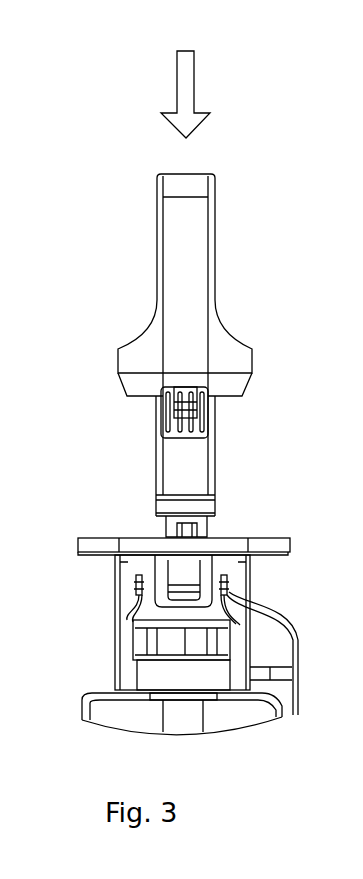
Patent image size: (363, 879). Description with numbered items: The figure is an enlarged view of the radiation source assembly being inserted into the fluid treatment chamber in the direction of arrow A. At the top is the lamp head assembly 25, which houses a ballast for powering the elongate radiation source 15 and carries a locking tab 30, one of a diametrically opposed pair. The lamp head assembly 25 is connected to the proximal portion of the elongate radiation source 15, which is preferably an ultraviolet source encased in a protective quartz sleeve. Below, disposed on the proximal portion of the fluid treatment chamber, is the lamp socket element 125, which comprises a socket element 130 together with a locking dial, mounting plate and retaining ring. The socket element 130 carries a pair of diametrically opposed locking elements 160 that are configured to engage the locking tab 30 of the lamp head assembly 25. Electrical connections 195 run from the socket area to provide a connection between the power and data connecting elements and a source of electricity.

The direction of insertion A is at (193, 84).
The lamp head assembly 25 is at (203, 210).
The locking tab 30 is at (180, 413).
The socket element 130 is at (280, 543).
The lamp socket element 125 is at (72, 538).
The locking element 160 is at (193, 566).
The electrical connections 195 is at (125, 618).
The elongate radiation source 15 is at (160, 732).